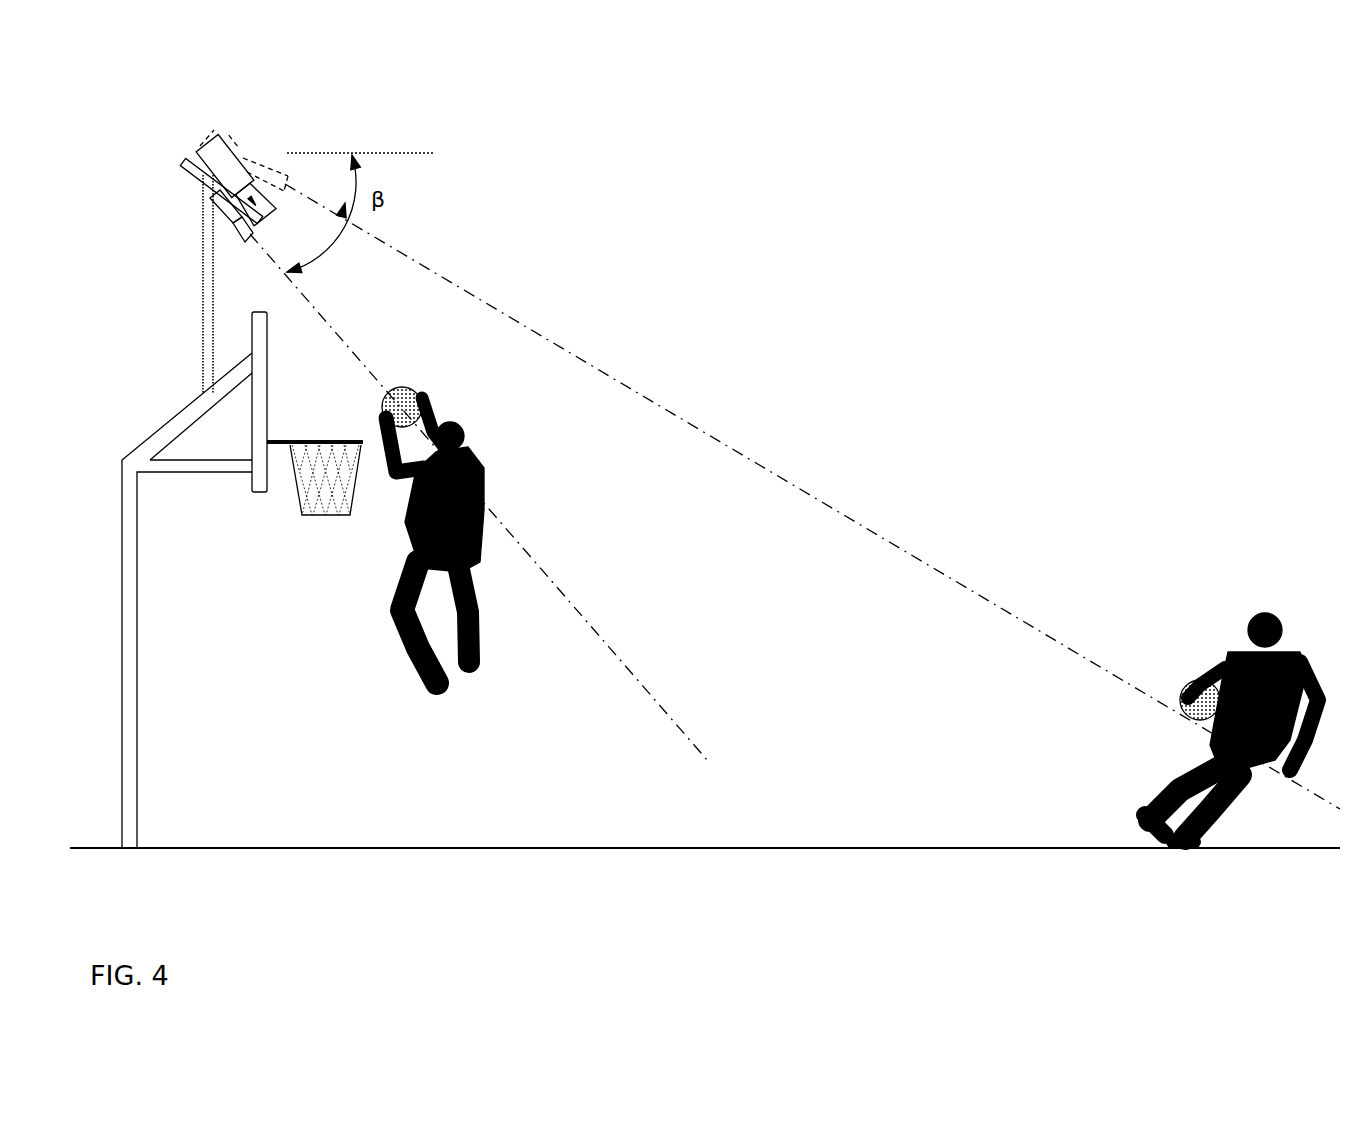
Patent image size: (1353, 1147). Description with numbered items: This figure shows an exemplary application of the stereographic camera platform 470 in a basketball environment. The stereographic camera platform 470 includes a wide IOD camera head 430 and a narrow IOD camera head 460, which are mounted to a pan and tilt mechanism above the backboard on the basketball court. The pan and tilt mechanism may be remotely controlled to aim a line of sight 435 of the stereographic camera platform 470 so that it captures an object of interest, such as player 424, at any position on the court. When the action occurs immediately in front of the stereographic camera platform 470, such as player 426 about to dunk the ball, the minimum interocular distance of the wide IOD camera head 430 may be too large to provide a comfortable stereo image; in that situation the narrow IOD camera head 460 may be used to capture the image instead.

The stereographic camera platform 470 is at (213, 154).
The wide IOD camera head 430 is at (269, 130).
The narrow IOD camera head 460 is at (204, 238).
The line of sight 435 is at (532, 558).
The player 426 is at (463, 441).
The player 424 is at (1267, 612).